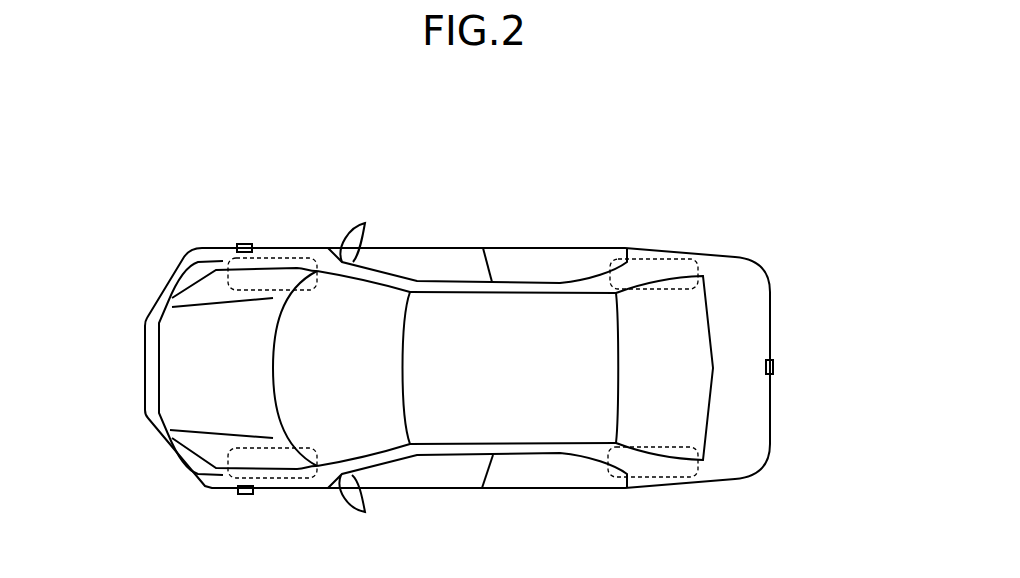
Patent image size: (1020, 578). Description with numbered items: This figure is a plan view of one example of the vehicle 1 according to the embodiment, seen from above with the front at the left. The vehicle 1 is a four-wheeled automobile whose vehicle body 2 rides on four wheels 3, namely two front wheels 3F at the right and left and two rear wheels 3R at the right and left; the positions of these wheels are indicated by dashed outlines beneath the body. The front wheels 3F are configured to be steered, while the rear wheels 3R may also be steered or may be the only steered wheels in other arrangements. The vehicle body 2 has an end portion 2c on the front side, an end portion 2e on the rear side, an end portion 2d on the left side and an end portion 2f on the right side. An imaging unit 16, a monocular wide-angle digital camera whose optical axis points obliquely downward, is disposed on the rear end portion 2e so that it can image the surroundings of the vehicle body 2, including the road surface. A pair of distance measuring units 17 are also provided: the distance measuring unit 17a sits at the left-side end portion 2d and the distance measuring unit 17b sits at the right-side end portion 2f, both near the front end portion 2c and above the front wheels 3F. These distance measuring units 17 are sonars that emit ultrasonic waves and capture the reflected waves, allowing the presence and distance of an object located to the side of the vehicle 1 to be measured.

The vehicle 1 is at (457, 316).
The vehicle body 2 is at (718, 251).
The end portion on the front side of the vehicle body 2c is at (143, 405).
The end portion on the left side of the vehicle body 2d is at (553, 488).
The end portion on the rear side of the vehicle body 2e is at (770, 392).
The end portion on the right side of the vehicle body 2f is at (573, 250).
The wheels 3 is at (463, 371).
The front wheels 3F is at (262, 257).
The rear wheels 3R is at (652, 258).
The imaging unit 16 is at (774, 367).
The distance measuring units 17 is at (198, 375).
The distance measuring unit 17a is at (245, 494).
The distance measuring unit 17b is at (244, 244).